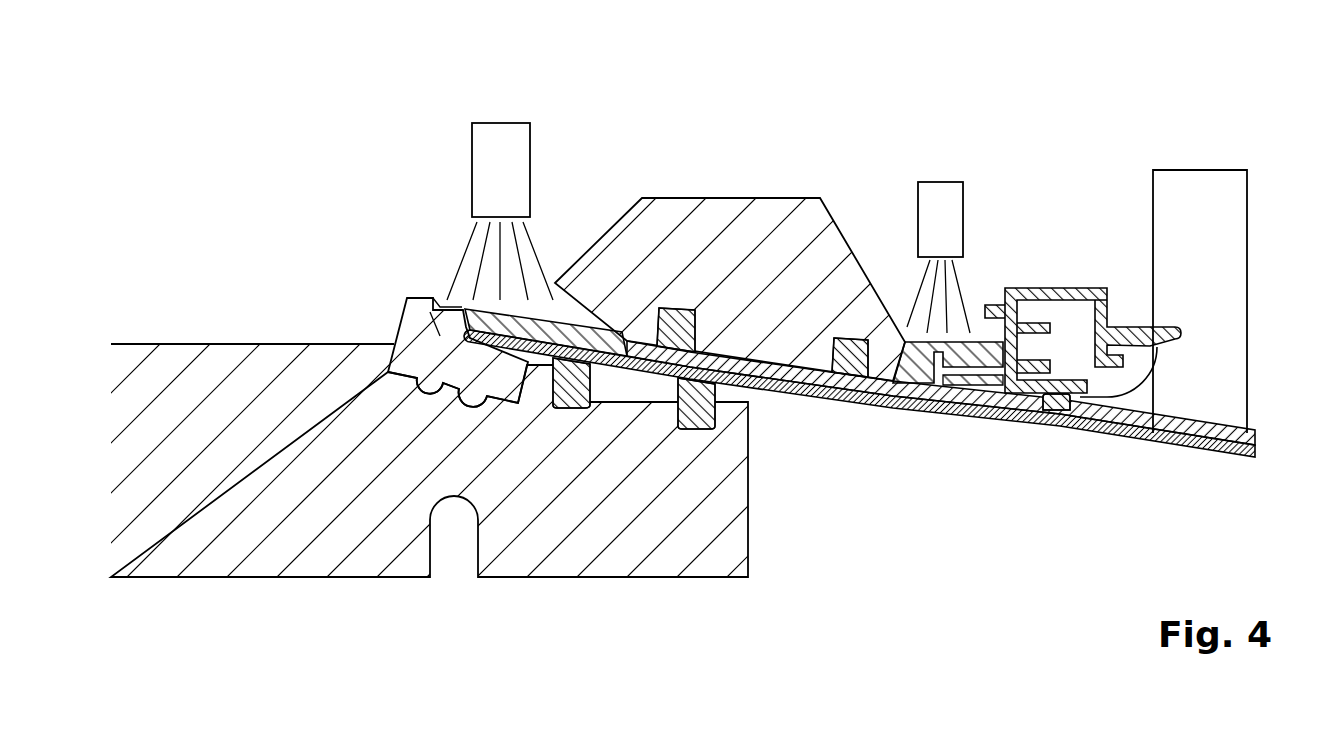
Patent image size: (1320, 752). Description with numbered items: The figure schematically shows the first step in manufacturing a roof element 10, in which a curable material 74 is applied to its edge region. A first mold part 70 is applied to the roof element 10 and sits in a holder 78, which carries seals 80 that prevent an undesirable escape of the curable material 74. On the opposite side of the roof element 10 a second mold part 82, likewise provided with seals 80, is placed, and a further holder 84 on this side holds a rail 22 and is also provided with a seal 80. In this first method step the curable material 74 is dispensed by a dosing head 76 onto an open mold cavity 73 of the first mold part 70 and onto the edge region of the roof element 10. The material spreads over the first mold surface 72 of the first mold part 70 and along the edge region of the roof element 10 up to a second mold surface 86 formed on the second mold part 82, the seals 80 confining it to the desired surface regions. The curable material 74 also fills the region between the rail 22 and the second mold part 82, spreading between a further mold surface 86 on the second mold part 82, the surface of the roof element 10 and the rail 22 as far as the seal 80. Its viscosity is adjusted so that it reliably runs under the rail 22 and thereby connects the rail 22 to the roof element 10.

The roof element 10 is at (978, 420).
The rail 22 is at (1063, 290).
The first mold part 70 is at (408, 310).
The first mold surface 72 is at (467, 333).
The open mold cavity 73 is at (445, 298).
The curable material 74 is at (462, 256).
The dosing head 76 is at (502, 123).
The holder 78 is at (231, 352).
The seals 80 is at (673, 310).
The second mold part 82 is at (736, 200).
The holder 84 is at (1200, 170).
The second mold surface 86 is at (556, 302).